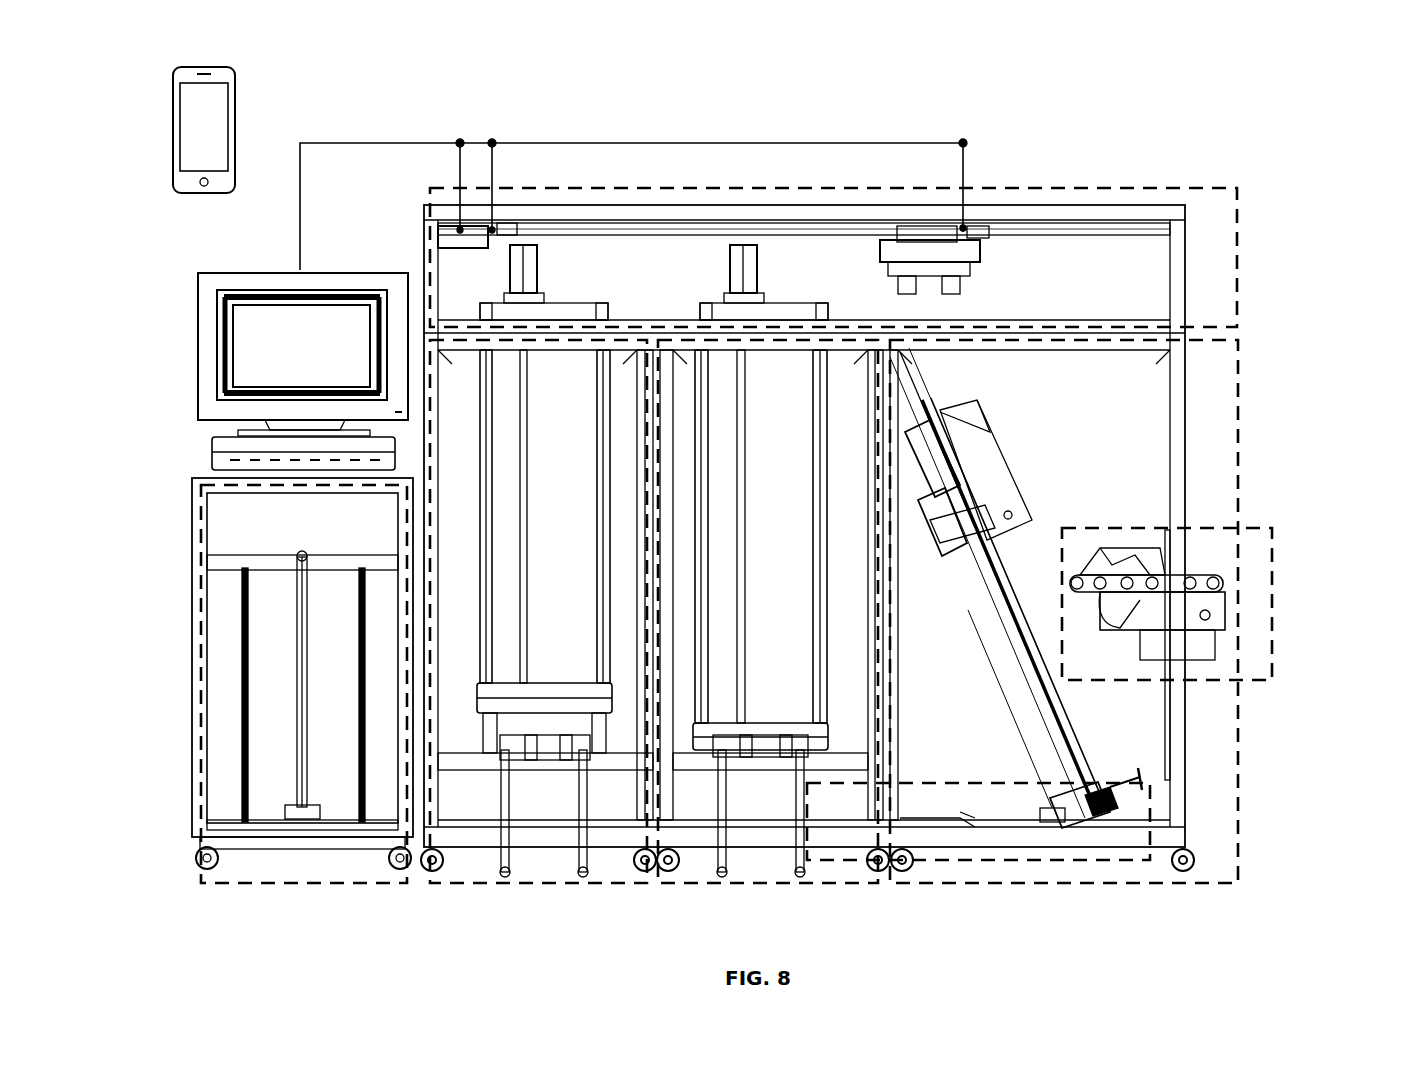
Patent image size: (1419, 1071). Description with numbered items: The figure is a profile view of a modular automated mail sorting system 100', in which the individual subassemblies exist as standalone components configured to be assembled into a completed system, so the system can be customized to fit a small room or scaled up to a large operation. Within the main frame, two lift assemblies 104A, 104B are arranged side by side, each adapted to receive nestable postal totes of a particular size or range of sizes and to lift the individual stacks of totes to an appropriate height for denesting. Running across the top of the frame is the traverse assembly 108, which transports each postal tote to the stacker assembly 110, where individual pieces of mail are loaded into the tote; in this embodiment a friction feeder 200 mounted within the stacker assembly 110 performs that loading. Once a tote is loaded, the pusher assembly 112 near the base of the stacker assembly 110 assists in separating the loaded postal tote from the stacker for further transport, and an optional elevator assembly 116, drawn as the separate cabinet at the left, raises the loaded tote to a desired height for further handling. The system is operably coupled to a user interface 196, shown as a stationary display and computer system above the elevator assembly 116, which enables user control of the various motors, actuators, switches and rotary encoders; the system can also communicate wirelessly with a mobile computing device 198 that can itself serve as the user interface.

The modular automated mail sorting system 100' is at (1097, 105).
The lift assembly 104A is at (545, 870).
The lift assembly 104B is at (752, 870).
The traverse assembly 108 is at (1210, 218).
The stacker assembly 110 is at (1212, 372).
The pusher assembly 112 is at (1145, 800).
The elevator assembly 116 is at (302, 870).
The user interface 196 is at (262, 330).
The mobile computing device 198 is at (222, 120).
The friction feeder 200 is at (1262, 552).